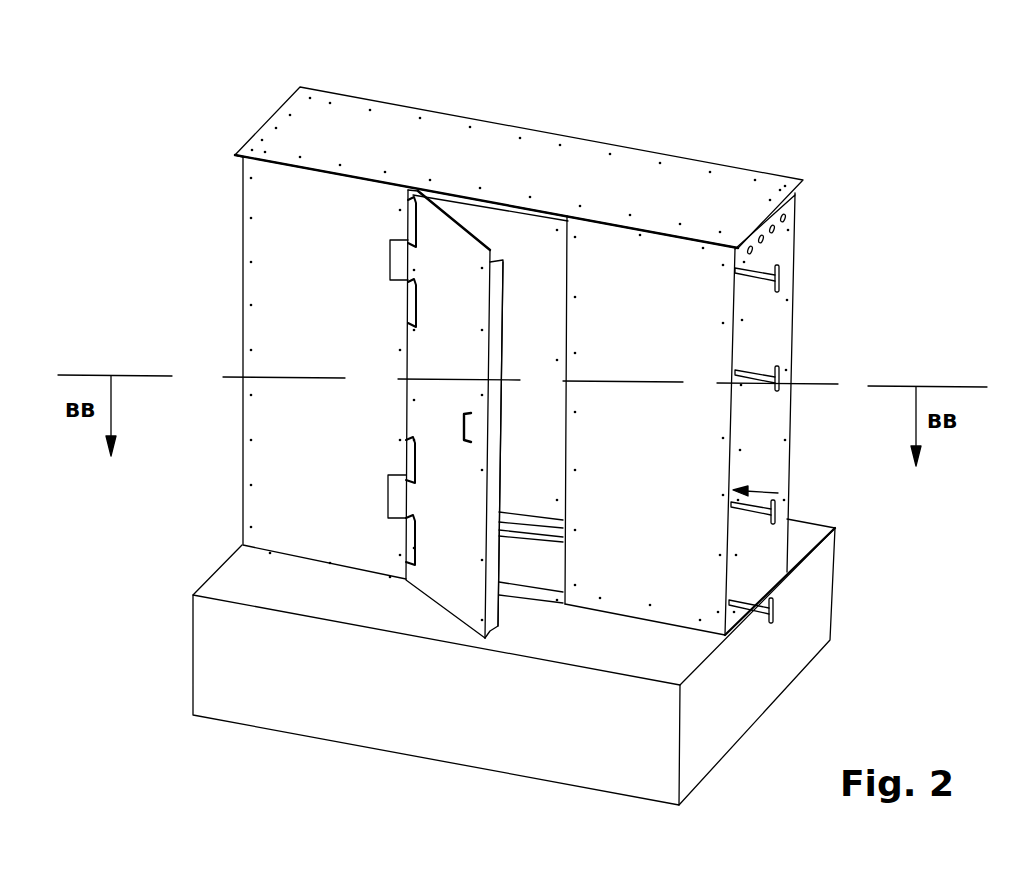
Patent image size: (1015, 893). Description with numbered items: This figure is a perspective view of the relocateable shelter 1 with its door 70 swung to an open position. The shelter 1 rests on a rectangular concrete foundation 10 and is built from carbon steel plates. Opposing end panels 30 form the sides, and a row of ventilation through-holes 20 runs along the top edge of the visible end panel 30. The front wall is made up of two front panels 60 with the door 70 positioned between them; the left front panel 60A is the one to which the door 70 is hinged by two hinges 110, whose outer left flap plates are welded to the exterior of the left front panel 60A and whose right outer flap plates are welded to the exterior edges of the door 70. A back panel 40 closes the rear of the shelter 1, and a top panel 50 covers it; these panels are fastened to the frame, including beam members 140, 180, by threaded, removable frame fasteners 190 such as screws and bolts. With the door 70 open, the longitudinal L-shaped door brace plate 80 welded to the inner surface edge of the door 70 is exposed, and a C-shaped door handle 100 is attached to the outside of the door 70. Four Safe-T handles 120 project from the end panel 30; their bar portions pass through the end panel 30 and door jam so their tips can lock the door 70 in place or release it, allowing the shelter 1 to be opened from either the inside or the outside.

The relocateable shelter 1 is at (188, 125).
The concrete foundation 10 is at (263, 675).
The ventilation through-holes 20 is at (775, 230).
The end panel 30 is at (763, 445).
The back panel 40 is at (543, 245).
The top panel 50 is at (482, 150).
The front panel 60 is at (713, 357).
The left front panel 60A is at (323, 472).
The door 70 is at (432, 230).
The door brace plate 80 is at (493, 617).
The door handle 100 is at (462, 432).
The hinge 110 is at (397, 272).
The Safe-T handle 120 is at (773, 390).
The beam member 140 is at (547, 593).
The beam member 180 is at (530, 208).
The frame fastener 190 is at (253, 412).